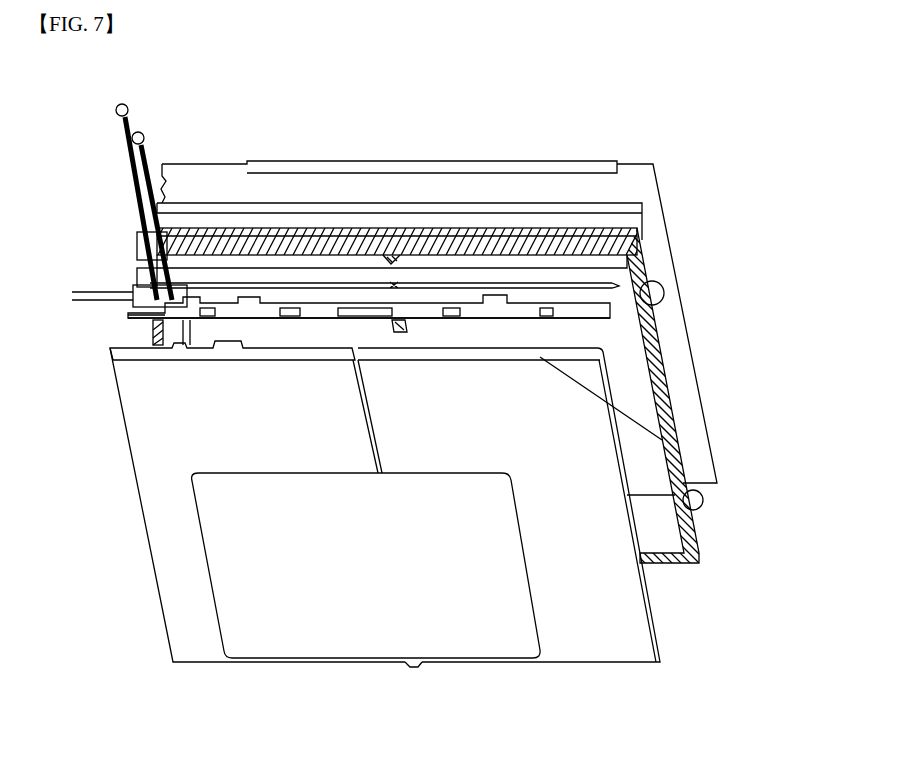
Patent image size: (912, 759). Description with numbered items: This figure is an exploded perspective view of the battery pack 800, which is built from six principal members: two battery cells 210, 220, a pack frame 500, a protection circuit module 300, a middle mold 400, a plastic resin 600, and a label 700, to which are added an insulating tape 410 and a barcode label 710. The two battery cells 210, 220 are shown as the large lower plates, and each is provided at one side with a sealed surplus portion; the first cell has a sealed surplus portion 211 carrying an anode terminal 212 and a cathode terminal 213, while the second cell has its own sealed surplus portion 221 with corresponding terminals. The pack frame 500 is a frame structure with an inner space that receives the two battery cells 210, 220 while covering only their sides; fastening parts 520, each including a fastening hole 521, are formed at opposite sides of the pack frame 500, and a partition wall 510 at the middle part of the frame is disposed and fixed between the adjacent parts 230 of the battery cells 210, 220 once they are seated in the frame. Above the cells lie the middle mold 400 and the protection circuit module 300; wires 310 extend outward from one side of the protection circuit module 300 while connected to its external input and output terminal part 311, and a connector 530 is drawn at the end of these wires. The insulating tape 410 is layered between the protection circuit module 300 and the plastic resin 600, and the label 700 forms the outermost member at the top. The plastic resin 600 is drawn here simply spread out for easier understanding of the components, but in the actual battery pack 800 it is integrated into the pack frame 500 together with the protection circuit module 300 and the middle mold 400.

The battery pack 800 is at (105, 139).
The label 700 is at (645, 175).
The plastic resin 600 is at (638, 213).
The insulating tape 410 is at (600, 277).
The protection circuit module 300 is at (600, 294).
The middle mold 400 is at (603, 310).
The pack frame 500 is at (665, 383).
The sealed surplus portion 221 is at (678, 447).
The fastening hole 521 is at (702, 497).
The fastening part 520 is at (703, 522).
The wires 310 is at (124, 182).
The connector 530 is at (173, 300).
The partition wall 510 is at (385, 262).
The external input and output terminal part 311 is at (128, 317).
The sealed surplus portion 211 is at (110, 352).
The anode terminal 212 is at (172, 352).
The cathode terminal 213 is at (232, 350).
The adjacent parts 230 is at (366, 352).
The battery cell 210 is at (199, 634).
The barcode label 710 is at (383, 632).
The battery cell 220 is at (585, 638).